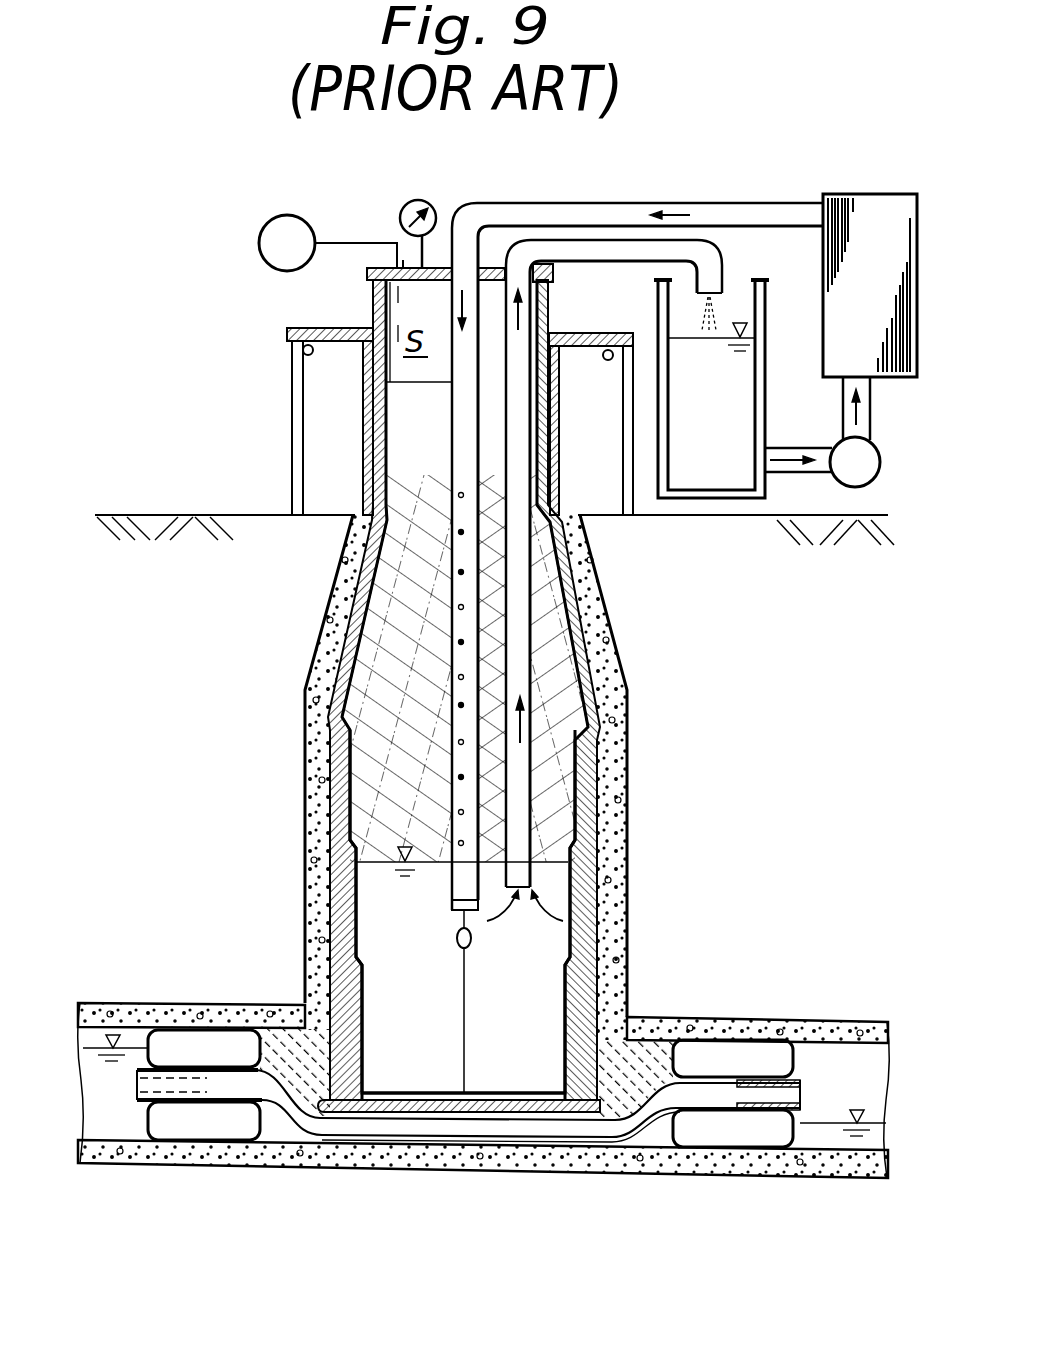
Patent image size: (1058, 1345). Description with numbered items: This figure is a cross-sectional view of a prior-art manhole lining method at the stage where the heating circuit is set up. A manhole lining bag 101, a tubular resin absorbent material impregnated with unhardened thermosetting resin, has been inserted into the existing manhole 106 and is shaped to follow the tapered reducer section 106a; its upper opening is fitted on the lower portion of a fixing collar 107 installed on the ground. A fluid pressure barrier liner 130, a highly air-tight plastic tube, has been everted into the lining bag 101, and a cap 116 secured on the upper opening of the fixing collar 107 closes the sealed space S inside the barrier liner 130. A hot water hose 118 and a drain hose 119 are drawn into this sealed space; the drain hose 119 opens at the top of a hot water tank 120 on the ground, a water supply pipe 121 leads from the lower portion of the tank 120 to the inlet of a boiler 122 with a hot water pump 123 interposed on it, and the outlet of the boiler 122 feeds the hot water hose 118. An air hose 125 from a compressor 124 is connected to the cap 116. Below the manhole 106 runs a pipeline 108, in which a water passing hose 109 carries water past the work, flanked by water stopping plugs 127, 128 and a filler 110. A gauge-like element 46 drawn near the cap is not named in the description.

The pressure gauge 46 is at (428, 201).
The manhole lining bag 101 is at (360, 968).
The existing manhole 106 is at (628, 838).
The reducer section 106a is at (610, 652).
The fixing collar 107 is at (580, 332).
The pipeline 108 is at (743, 1022).
The water passing hose 109 is at (277, 1140).
The filler 110 is at (648, 1017).
The cap 116 is at (403, 266).
The hot water hose 118 is at (455, 438).
The drain hose 119 is at (547, 448).
The hot water tank 120 is at (758, 427).
The water supply pipe 121 is at (827, 474).
The boiler 122 is at (858, 203).
The hot water pump 123 is at (873, 481).
The compressor 124 is at (278, 215).
The air hose 125 is at (330, 244).
The water stopping plug 127 is at (147, 1127).
The water stopping plug 128 is at (793, 1053).
The fluid pressure barrier liner 130 is at (370, 1062).